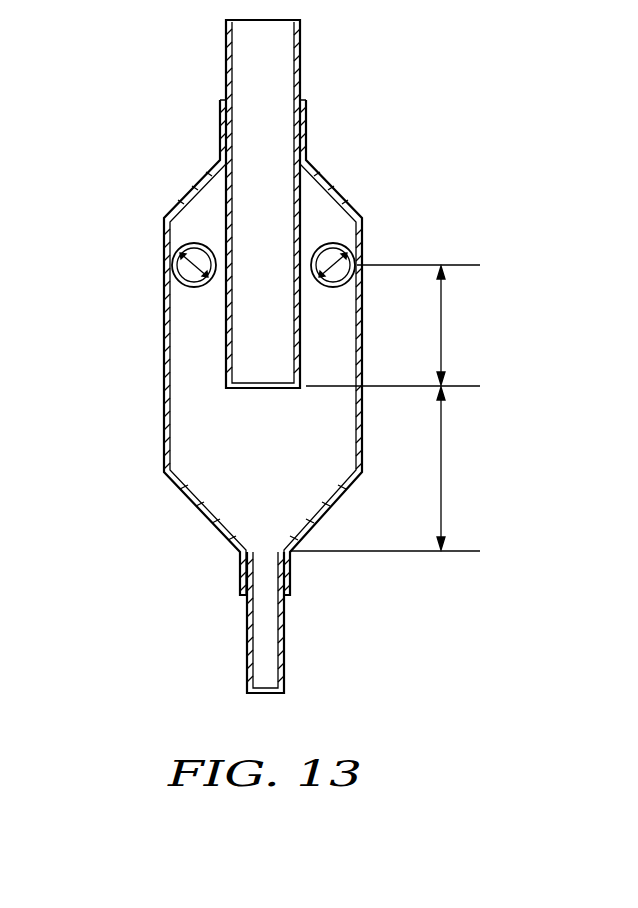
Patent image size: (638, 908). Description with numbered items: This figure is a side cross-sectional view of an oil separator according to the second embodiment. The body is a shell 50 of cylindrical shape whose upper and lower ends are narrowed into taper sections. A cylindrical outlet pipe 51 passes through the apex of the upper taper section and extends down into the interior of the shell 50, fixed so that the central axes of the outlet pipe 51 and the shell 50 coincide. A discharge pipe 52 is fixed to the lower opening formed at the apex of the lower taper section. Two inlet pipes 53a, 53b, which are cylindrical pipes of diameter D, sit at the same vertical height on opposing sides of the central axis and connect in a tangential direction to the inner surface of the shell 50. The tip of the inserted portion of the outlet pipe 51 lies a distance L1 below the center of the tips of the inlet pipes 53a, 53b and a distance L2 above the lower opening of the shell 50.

The shell 50 is at (164, 322).
The outlet pipe 51 is at (300, 48).
The discharge pipe 52 is at (284, 651).
The inlet pipe 53a is at (333, 288).
The inlet pipe 53b is at (196, 288).
The diameter D is at (186, 243).
The distance L1 is at (399, 325).
The distance L2 is at (391, 469).